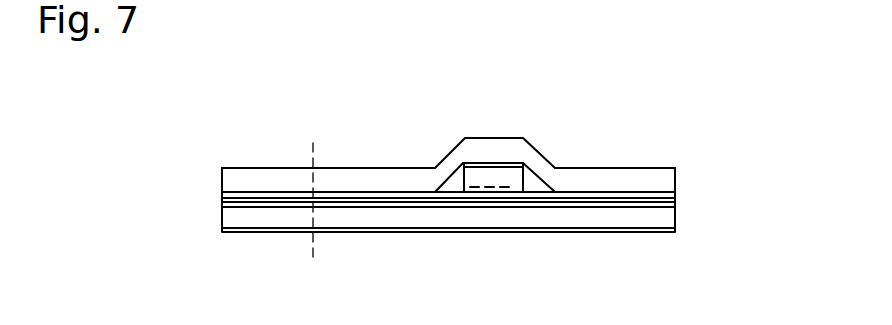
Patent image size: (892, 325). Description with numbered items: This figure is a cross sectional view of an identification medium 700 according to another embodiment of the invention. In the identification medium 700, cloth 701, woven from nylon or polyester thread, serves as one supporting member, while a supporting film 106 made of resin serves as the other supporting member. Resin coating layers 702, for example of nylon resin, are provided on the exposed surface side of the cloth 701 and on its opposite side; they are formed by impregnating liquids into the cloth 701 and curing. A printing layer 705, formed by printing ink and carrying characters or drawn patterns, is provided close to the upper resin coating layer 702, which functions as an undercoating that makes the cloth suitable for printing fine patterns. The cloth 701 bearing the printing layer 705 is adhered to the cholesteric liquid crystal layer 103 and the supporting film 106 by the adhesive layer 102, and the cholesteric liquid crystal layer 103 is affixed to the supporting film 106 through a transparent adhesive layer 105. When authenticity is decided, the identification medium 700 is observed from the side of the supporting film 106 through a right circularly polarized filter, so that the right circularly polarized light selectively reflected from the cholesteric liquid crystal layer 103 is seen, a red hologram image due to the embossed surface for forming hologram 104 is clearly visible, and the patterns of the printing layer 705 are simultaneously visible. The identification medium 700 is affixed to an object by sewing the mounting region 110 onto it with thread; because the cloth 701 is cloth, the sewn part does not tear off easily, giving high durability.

The identification medium 700 is at (519, 174).
The printing layer 705 is at (633, 203).
The supporting film 106 is at (665, 182).
The adhesive layer 102 is at (668, 196).
The cloth 701 is at (668, 218).
The resin coating layers 702 is at (597, 207).
The transparent adhesive layer 105 is at (513, 165).
The cholesteric liquid crystal layer 103 is at (485, 177).
The embossed surface for forming hologram 104 is at (492, 190).
The mounting region 110 is at (312, 283).